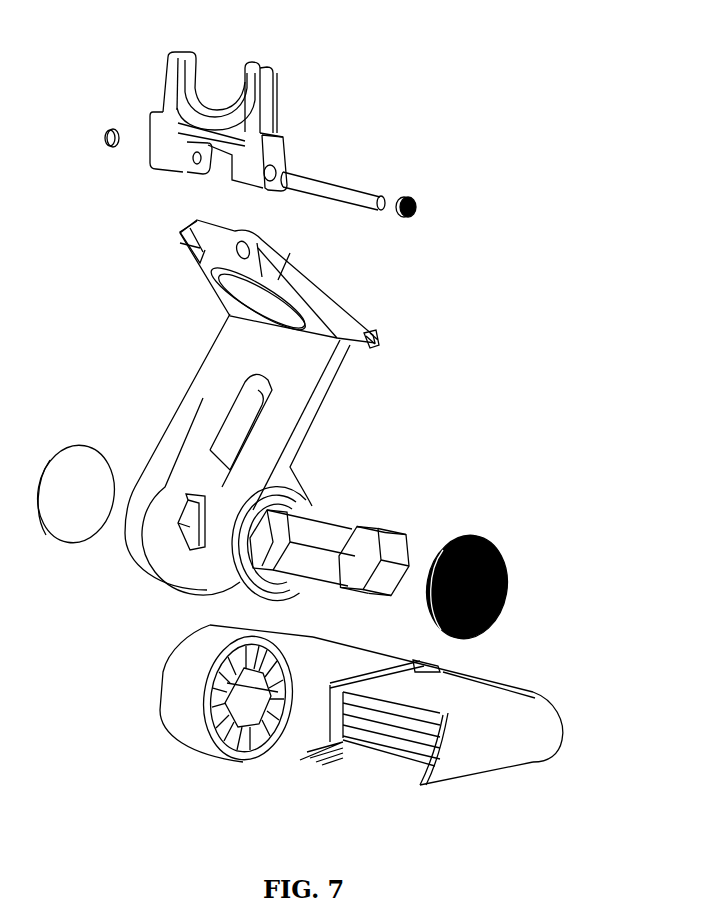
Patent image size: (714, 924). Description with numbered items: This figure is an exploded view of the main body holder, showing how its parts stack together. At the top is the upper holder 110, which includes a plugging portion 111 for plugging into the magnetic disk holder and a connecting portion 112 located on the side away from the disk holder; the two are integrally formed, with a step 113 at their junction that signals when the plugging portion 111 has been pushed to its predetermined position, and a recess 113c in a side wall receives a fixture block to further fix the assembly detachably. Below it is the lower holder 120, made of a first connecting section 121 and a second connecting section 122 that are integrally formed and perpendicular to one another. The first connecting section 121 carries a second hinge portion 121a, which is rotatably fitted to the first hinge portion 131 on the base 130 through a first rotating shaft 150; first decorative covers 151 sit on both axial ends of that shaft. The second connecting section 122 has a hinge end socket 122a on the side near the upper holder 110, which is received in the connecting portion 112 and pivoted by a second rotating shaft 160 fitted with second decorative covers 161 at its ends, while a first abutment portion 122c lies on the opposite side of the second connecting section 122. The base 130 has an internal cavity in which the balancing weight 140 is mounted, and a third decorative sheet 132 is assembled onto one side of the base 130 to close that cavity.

The upper holder 110 is at (176, 98).
The plugging portion 111 is at (276, 82).
The connecting portion 112 is at (168, 150).
The step 113 is at (215, 82).
The recess 113c is at (195, 52).
The lower holder 120 is at (213, 372).
The first connecting section 121 is at (177, 430).
The second hinge portion 121a is at (170, 556).
The second connecting section 122 is at (330, 305).
The hinge end socket 122a is at (200, 238).
The first abutment portion 122c is at (372, 335).
The base 130 is at (297, 758).
The first hinge portion 131 is at (173, 687).
The third decorative sheet 132 is at (470, 765).
The balancing weight 140 is at (480, 690).
The first rotating shaft 150 is at (340, 525).
The first decorative cover 151 is at (485, 534).
The second rotating shaft 160 is at (330, 190).
The second decorative cover 161 is at (412, 198).